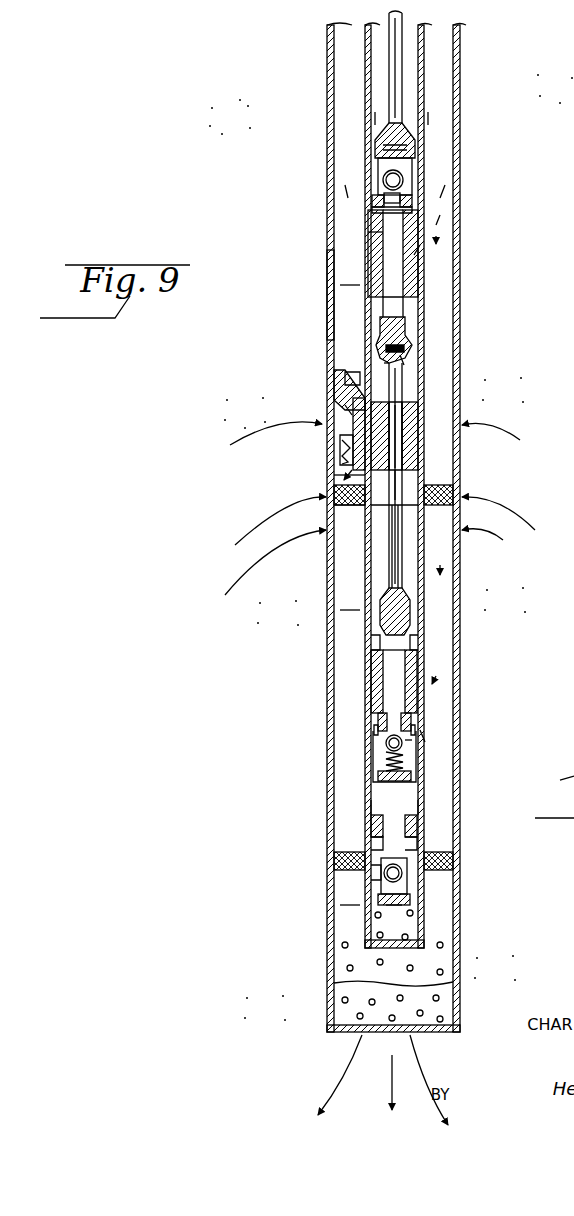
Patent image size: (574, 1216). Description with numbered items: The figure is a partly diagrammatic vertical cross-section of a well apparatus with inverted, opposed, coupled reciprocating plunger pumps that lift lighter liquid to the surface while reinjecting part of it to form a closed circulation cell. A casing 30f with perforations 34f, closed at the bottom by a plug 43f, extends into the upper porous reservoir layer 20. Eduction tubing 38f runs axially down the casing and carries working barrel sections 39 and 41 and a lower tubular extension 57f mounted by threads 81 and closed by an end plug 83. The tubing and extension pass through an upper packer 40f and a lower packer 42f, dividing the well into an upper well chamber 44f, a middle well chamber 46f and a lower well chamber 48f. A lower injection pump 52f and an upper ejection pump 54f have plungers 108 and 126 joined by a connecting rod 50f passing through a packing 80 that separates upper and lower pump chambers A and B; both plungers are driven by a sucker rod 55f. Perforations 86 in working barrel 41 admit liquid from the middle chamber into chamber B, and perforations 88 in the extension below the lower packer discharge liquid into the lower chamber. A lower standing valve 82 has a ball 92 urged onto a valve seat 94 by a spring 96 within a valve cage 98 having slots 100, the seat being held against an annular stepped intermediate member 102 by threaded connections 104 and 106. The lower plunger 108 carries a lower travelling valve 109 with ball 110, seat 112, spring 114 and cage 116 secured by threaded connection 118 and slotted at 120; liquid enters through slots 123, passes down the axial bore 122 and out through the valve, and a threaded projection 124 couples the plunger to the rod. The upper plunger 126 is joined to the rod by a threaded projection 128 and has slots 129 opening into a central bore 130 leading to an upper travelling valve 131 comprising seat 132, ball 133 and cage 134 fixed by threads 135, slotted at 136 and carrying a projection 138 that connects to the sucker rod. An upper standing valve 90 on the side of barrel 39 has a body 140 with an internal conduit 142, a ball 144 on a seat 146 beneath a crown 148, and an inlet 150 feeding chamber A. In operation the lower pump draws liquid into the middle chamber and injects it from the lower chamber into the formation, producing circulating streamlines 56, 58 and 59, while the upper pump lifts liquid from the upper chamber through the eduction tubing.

The upper porous reservoir layer 20 is at (391, 547).
The casing 30f is at (462, 115).
The perforations 34f is at (330, 260).
The eduction tubing 38f is at (427, 70).
The working barrel section 39 is at (406, 340).
The upper packer 40f is at (455, 490).
The working barrel section 41 is at (442, 570).
The lower packer 42f is at (456, 860).
The plug 43f is at (345, 1035).
The upper well chamber 44f is at (340, 293).
The middle well chamber 46f is at (340, 617).
The lower well chamber 48f is at (340, 913).
The connecting rod 50f is at (394, 560).
The lower reciprocating injection pump 52f is at (440, 680).
The upper reciprocating ejection pump 54f is at (438, 240).
The sucker rod 55f is at (392, 72).
The streamline 56 is at (383, 531).
The lower tubular extension 57f is at (427, 932).
The streamline 58 is at (375, 836).
The streamline 59 is at (384, 443).
The packing 80 is at (410, 405).
The threads 81 is at (427, 805).
The lower ball type standing valve 82 is at (380, 877).
The end plug 83 is at (392, 952).
The perforations 86 is at (362, 556).
The perforations 88 is at (374, 918).
The upper standing ball valve 90 is at (340, 398).
The ball 92 is at (404, 873).
The valve seat 94 is at (372, 842).
The spring 96 is at (372, 890).
The standing valve cage 98 is at (396, 906).
The elongated slots 100 is at (410, 885).
The annular stepped intermediate member 102 is at (372, 822).
The threaded connection 104 is at (417, 828).
The threaded connection 106 is at (417, 843).
The main plunger 108 is at (417, 660).
The lower travelling valve 109 is at (376, 757).
The valve ball 110 is at (386, 745).
The valve seat 112 is at (376, 727).
The valve spring 114 is at (380, 773).
The valve cage 116 is at (402, 781).
The threaded connection 118 is at (410, 728).
The elongate slots 120 is at (412, 752).
The axial bore 122 is at (400, 700).
The elongate slots 123 is at (377, 640).
The circular threaded projection 124 is at (396, 610).
The plunger member 126 is at (370, 232).
The threaded projection 128 is at (390, 345).
The elongate slots 129 is at (410, 308).
The central bore 130 is at (398, 287).
The upper travelling valve 131 is at (384, 180).
The valve seat 132 is at (373, 202).
The valve ball 133 is at (415, 195).
The valve cage 134 is at (412, 145).
The threads 135 is at (415, 213).
The elongate slots 136 is at (410, 178).
The projection 138 is at (383, 143).
The body 140 is at (345, 370).
The internal conduit 142 is at (355, 440).
The ball 144 is at (345, 460).
The valve seat 146 is at (348, 474).
The valve crown 148 is at (346, 452).
The lower valve inlet 150 is at (352, 491).
The upper pump chamber A is at (408, 365).
The lower pump chamber B is at (412, 490).